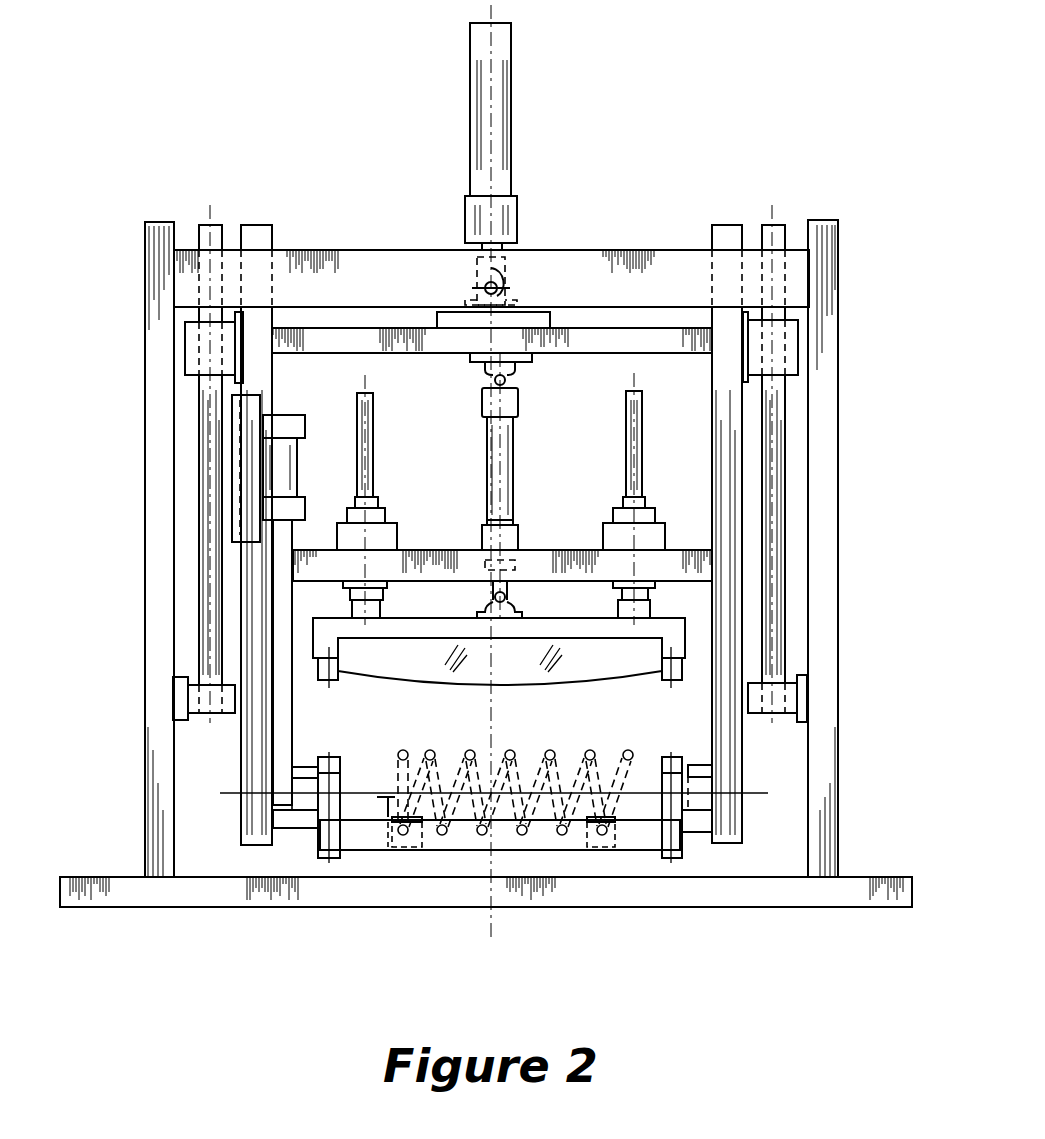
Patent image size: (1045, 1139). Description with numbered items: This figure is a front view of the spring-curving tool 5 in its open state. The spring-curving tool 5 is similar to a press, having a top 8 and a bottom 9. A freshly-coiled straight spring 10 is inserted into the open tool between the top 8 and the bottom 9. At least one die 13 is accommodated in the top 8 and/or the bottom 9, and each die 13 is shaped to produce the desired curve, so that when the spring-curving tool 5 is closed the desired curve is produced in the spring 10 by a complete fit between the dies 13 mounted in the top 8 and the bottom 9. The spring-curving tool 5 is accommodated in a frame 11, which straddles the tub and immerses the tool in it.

The spring-curving tool 5 is at (625, 857).
The top 8 is at (405, 628).
The bottom 9 is at (360, 843).
The spring 10 is at (402, 750).
The frame 11 is at (823, 597).
The die 13 is at (595, 662).